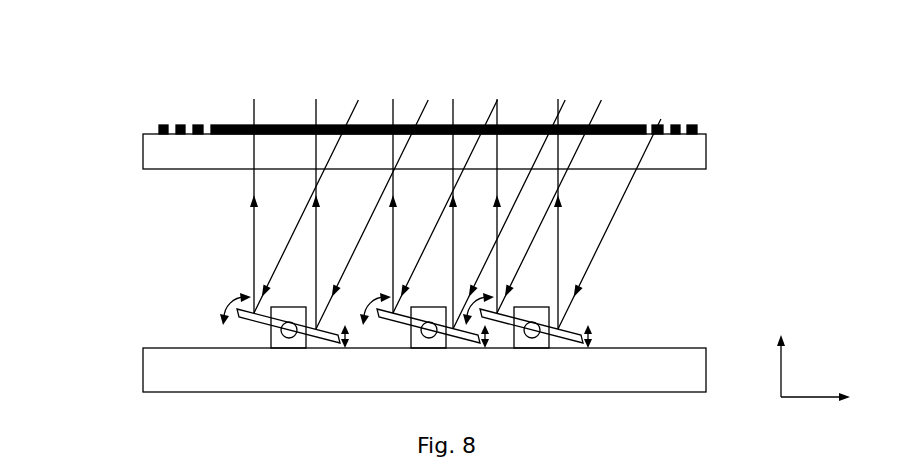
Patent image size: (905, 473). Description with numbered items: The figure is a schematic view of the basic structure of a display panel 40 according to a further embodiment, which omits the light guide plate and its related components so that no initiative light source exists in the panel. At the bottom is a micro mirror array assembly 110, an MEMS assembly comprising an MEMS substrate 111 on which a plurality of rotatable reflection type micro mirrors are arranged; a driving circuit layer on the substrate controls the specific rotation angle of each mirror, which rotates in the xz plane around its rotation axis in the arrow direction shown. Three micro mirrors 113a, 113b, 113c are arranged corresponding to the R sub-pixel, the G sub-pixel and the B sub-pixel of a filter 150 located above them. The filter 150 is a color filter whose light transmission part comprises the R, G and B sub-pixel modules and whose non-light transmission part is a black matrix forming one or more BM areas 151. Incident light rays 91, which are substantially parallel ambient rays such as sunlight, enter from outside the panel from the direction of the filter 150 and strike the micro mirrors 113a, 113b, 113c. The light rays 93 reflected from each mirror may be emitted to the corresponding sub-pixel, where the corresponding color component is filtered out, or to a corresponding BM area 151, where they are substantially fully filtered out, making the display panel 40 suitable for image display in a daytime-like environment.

The display panel 40 is at (121, 70).
The filter 150 is at (143, 143).
The BM area 151 is at (360, 125).
The light rays reflected from the micro mirror 93 is at (559, 210).
The incident light rays 91 is at (585, 283).
The micro mirror array assembly 110 is at (63, 323).
The MEMS substrate 111 is at (150, 365).
The micro mirror 113a is at (238, 315).
The micro mirror 113b is at (393, 321).
The micro mirror 113c is at (594, 340).